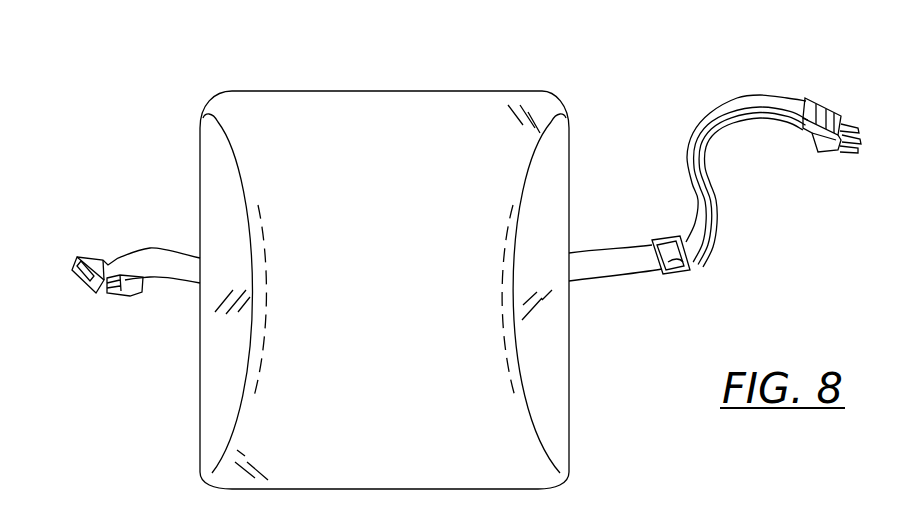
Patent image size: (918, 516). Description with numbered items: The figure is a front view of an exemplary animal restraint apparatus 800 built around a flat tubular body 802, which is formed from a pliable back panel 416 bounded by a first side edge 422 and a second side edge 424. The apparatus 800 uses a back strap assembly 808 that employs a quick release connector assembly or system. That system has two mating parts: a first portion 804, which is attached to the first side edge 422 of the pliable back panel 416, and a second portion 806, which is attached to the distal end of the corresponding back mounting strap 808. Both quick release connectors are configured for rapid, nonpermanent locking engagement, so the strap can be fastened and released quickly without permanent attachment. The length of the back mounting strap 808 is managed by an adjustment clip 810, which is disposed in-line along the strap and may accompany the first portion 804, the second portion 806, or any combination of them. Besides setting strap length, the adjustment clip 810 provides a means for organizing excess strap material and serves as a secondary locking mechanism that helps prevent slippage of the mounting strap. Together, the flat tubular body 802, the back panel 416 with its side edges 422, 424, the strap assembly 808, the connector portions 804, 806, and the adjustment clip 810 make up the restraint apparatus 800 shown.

The animal restraint apparatus 800 is at (173, 69).
The flat tubular body 802 is at (408, 309).
The first portion 804 is at (102, 295).
The second portion 806 is at (832, 110).
The back strap assembly 808 is at (128, 233).
The adjustment clip 810 is at (678, 274).
The pliable back panel 416 is at (548, 405).
The first side edge 422 is at (200, 434).
The second side edge 424 is at (569, 335).